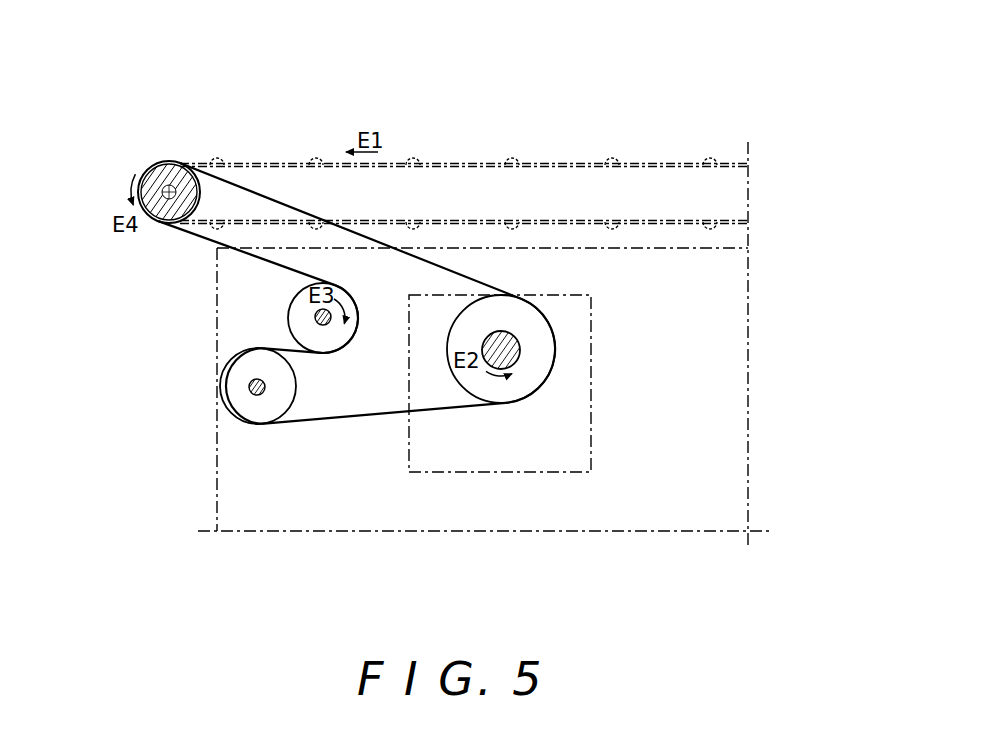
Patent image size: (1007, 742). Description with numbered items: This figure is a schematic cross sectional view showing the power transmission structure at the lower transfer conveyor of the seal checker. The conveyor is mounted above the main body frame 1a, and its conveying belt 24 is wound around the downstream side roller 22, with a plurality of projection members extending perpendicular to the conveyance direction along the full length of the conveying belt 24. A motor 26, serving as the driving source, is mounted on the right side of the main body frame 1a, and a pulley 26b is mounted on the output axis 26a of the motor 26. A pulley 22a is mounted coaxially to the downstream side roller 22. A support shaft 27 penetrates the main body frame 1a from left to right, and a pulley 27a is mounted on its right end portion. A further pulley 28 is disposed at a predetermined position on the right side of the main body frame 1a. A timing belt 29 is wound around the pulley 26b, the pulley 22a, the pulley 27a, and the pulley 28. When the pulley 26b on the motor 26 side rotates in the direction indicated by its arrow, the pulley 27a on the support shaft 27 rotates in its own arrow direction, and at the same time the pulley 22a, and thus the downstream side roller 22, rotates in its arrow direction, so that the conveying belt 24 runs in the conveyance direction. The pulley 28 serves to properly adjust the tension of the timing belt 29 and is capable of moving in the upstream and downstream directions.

The main body frame 1a is at (213, 484).
The downstream side roller 22 is at (170, 213).
The pulley 22a is at (155, 165).
The conveying belt 24 is at (258, 162).
The motor 26 is at (538, 457).
The output axis 26a is at (522, 355).
The pulley 26b is at (500, 395).
The support shaft 27 is at (326, 326).
The pulley 27a is at (302, 315).
The pulley 28 is at (220, 390).
The timing belt 29 is at (350, 420).